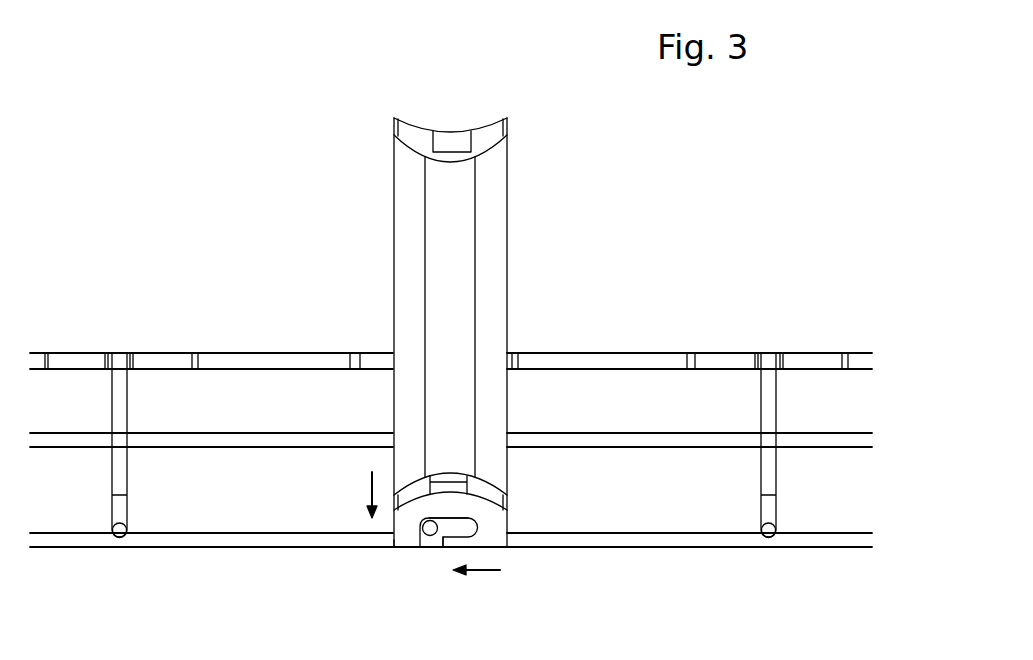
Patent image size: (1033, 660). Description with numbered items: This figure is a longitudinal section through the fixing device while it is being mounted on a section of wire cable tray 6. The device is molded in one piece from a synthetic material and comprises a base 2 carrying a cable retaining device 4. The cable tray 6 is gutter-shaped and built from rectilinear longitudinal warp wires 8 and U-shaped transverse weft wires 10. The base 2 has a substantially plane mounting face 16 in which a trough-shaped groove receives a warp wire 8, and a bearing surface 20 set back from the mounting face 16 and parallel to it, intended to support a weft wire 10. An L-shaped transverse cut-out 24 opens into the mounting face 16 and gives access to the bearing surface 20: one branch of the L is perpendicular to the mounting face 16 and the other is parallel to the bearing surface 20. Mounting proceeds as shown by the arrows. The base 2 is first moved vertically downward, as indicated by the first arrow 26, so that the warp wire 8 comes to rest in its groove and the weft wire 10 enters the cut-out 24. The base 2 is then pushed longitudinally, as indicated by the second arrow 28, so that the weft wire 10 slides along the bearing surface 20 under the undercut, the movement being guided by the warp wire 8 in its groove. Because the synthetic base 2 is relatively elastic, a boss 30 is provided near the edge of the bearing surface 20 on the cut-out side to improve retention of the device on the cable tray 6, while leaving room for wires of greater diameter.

The base 2 is at (495, 526).
The cable retaining device 4 is at (496, 190).
The wire cable tray 6 is at (153, 326).
The warp wire 8 is at (693, 542).
The weft wire 10 is at (431, 546).
The mounting face 16 is at (405, 549).
The bearing surface 20 is at (472, 546).
The transverse cut-out 24 is at (444, 549).
The first arrow 26 is at (370, 488).
The second arrow 28 is at (500, 572).
The boss 30 is at (462, 525).